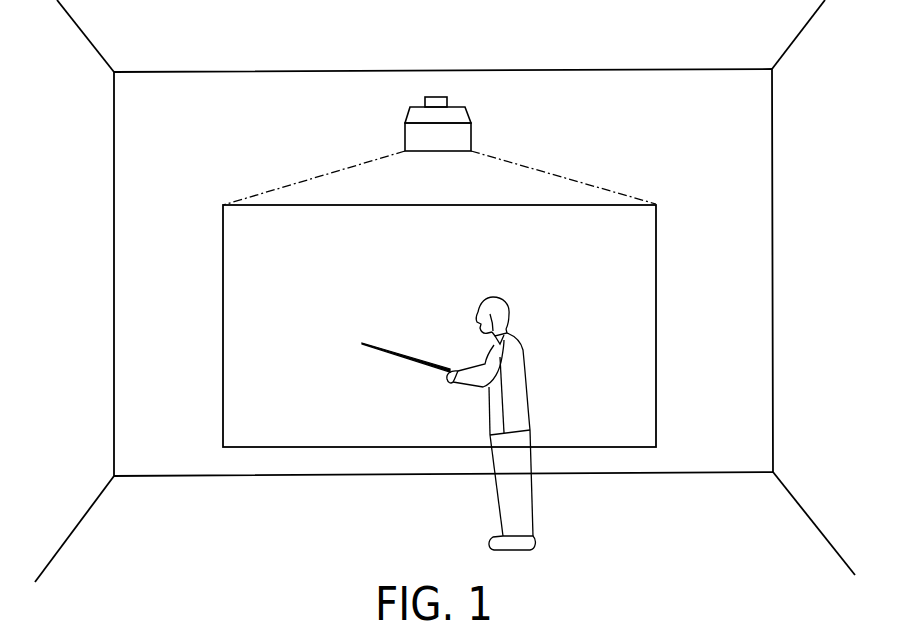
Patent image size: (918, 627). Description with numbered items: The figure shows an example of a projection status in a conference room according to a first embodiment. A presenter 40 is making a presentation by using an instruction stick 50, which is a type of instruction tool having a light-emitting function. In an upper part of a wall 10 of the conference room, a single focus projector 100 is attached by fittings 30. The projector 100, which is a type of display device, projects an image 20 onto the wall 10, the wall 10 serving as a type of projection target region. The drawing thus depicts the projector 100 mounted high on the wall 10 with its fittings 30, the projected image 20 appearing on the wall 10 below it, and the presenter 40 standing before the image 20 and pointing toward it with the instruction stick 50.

The wall 10 is at (745, 120).
The image 20 is at (497, 204).
The fittings 30 is at (448, 104).
The presenter 40 is at (522, 372).
The instruction stick 50 is at (388, 351).
The single focus projector 100 is at (471, 133).